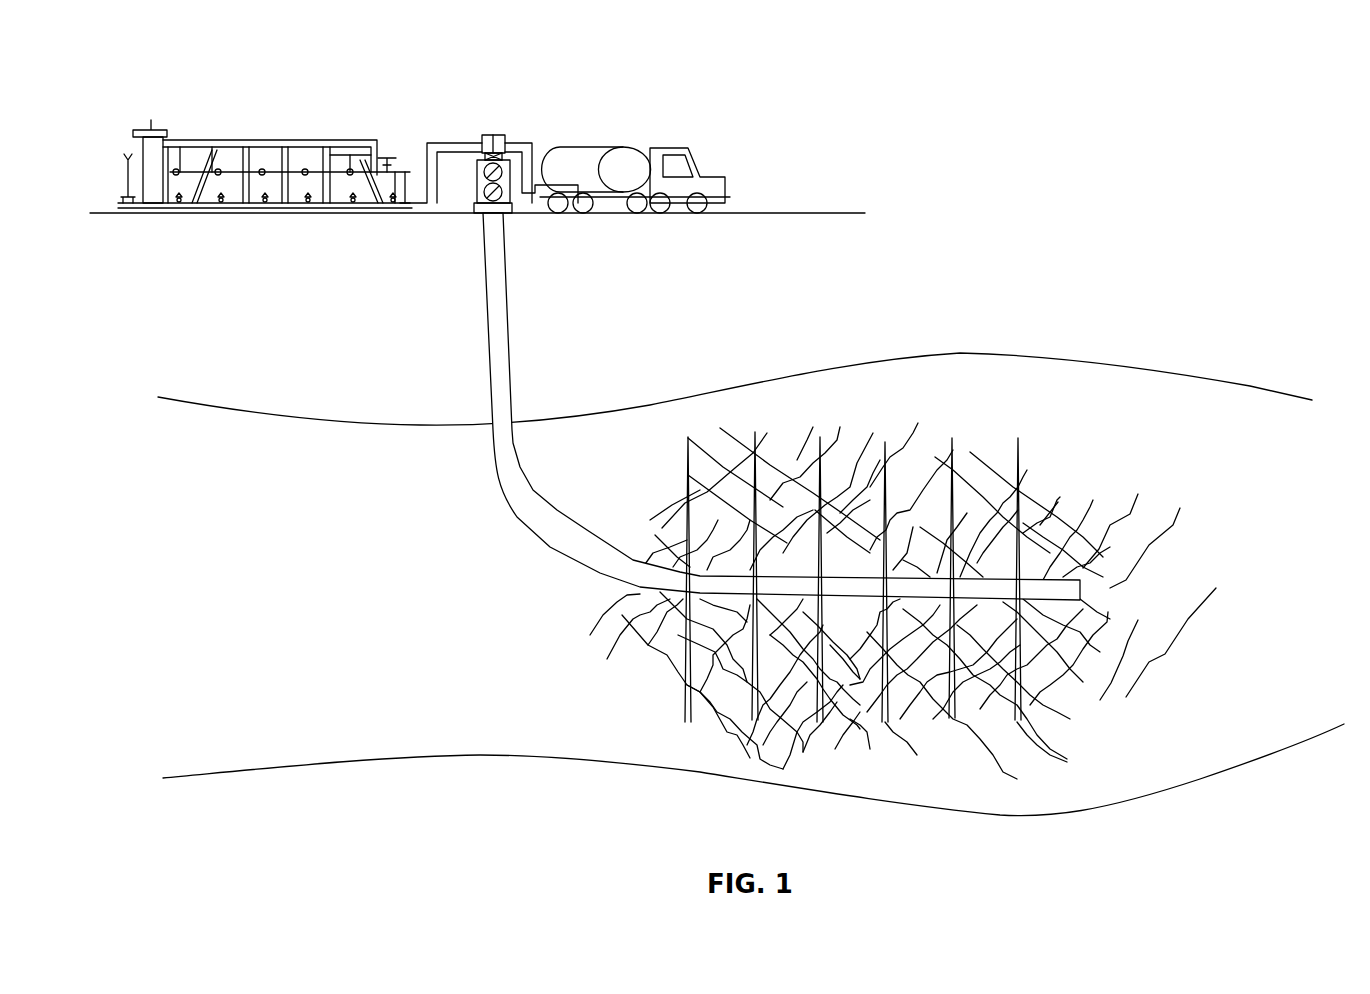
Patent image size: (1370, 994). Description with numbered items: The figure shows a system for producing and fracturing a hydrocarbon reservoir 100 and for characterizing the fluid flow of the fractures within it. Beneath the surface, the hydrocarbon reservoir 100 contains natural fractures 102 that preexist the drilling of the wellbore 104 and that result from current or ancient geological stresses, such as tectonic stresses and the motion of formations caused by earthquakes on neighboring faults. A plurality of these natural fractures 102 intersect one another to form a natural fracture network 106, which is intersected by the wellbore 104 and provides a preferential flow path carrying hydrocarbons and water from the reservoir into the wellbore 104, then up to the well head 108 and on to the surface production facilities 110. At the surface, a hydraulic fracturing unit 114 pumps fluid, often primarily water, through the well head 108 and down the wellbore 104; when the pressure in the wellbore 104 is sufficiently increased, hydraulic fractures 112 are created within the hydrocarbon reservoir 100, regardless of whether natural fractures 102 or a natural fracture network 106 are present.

The hydrocarbon reservoir 100 is at (717, 434).
The natural fractures 102 is at (1165, 660).
The wellbore 104 is at (497, 474).
The natural fracture network 106 is at (1112, 508).
The well head 108 is at (491, 133).
The surface production facilities 110 is at (268, 118).
The hydraulic fractures 112 is at (754, 437).
The hydraulic fracturing unit 114 is at (702, 177).